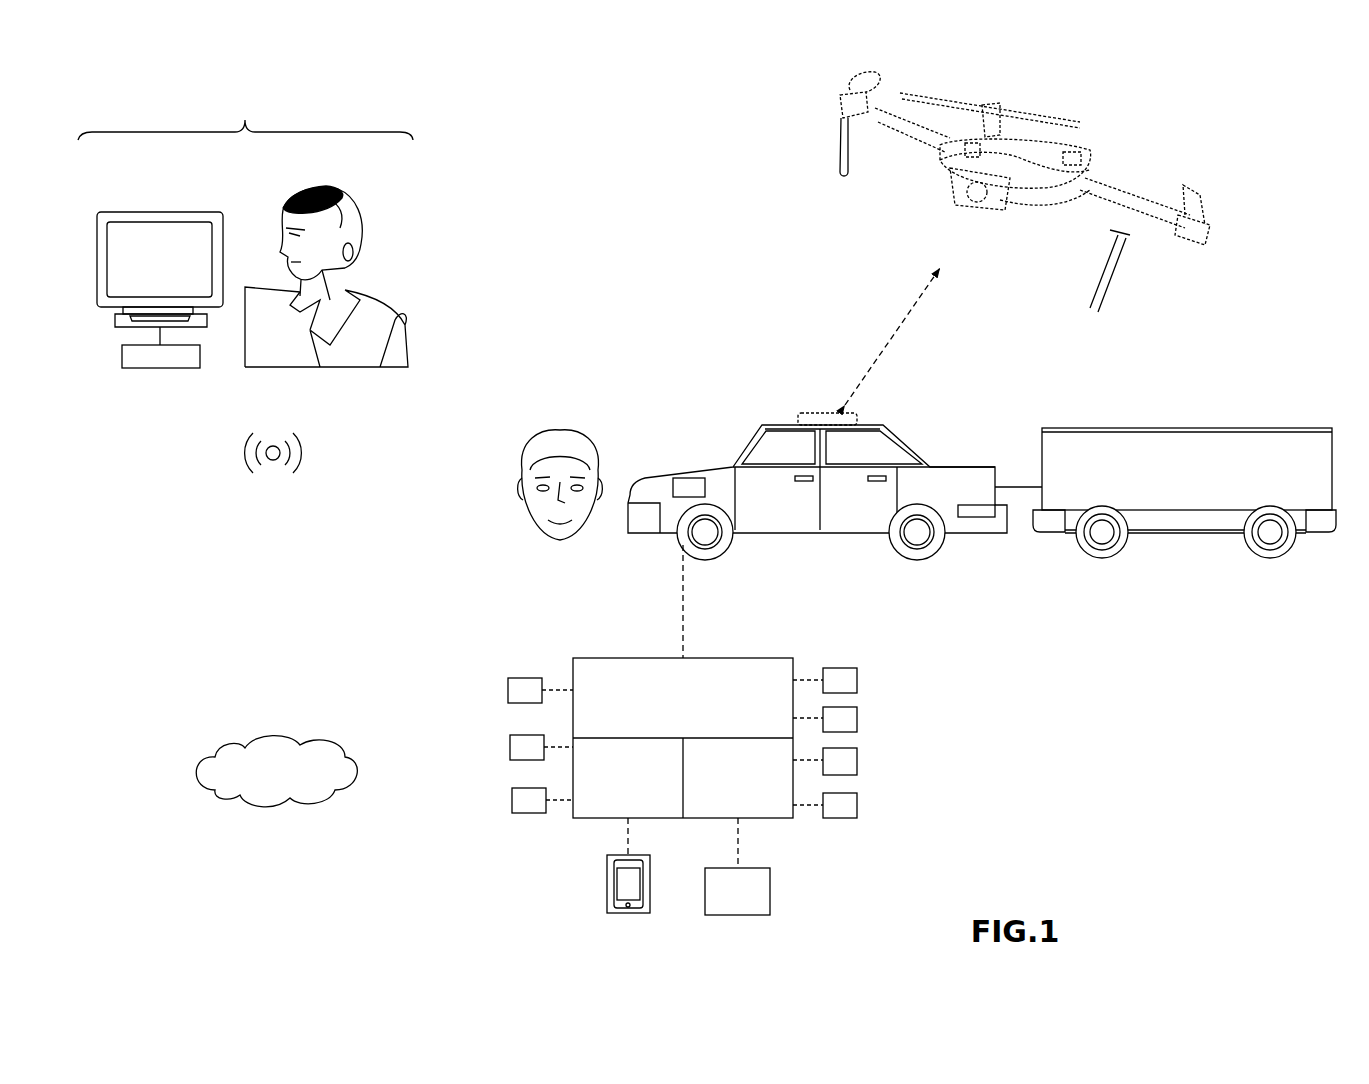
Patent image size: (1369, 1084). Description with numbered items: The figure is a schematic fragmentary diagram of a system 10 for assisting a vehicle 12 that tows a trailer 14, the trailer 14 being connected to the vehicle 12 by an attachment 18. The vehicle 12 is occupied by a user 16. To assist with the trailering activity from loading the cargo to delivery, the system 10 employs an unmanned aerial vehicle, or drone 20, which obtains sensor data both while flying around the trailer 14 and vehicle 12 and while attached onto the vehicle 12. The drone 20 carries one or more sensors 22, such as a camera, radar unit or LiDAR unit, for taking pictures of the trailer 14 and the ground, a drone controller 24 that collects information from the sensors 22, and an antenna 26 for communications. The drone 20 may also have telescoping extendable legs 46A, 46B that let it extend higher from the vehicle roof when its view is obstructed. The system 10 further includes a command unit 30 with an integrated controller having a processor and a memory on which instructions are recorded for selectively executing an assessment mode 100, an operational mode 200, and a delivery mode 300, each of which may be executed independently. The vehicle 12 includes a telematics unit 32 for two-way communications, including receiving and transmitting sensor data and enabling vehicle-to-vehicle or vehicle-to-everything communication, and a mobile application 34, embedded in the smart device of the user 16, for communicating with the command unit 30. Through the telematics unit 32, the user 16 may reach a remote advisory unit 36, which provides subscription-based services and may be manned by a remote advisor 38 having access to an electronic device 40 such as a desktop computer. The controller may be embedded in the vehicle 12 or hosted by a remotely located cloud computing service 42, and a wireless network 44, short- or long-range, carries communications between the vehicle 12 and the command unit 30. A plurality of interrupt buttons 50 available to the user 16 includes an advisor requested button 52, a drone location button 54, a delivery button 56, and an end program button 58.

The system 10 is at (572, 120).
The vehicle 12 is at (755, 405).
The trailer 14 is at (1200, 412).
The user 16 is at (550, 425).
The attachment 18 is at (1020, 452).
The drone 20 is at (979, 187).
The sensors 22 is at (967, 148).
The drone controller 24 is at (1082, 160).
The antenna 26 is at (1088, 138).
The command unit 30 is at (637, 640).
The telematics unit 32 is at (770, 893).
The mobile application 34 is at (607, 888).
The remote advisory unit 36 is at (222, 108).
The remote advisor 38 is at (333, 192).
The electronic device 40 is at (130, 198).
The cloud computing service 42 is at (290, 722).
The wireless network 44 is at (270, 490).
The extendable leg 46A is at (836, 132).
The extendable leg 46B is at (1120, 282).
The interrupt buttons 50 is at (855, 650).
The advisor requested button 52 is at (857, 680).
The drone location button 54 is at (857, 718).
The delivery button 56 is at (857, 762).
The end program button 58 is at (857, 805).
The assessment mode 100 is at (508, 690).
The operational mode 200 is at (510, 747).
The delivery mode 300 is at (512, 800).